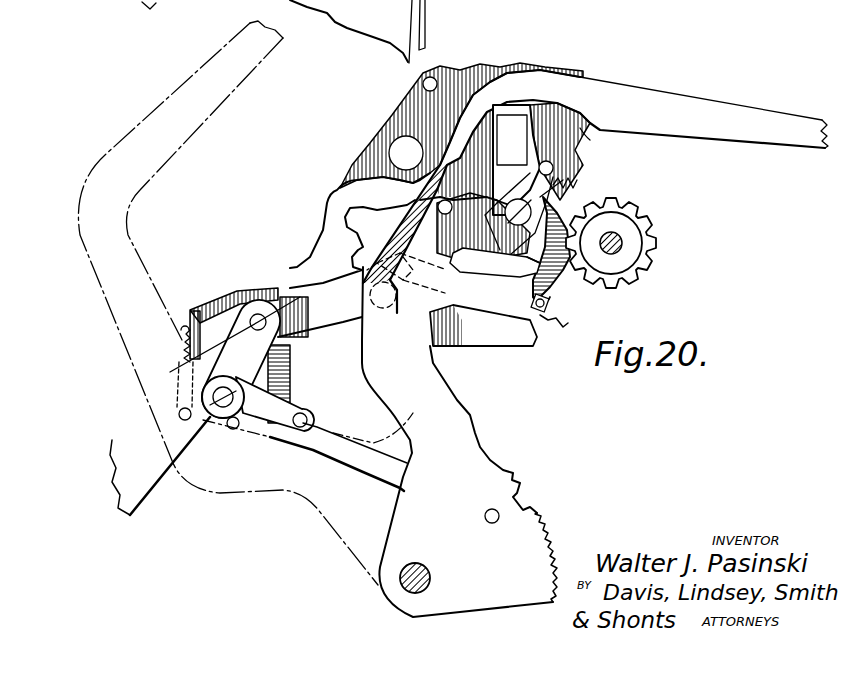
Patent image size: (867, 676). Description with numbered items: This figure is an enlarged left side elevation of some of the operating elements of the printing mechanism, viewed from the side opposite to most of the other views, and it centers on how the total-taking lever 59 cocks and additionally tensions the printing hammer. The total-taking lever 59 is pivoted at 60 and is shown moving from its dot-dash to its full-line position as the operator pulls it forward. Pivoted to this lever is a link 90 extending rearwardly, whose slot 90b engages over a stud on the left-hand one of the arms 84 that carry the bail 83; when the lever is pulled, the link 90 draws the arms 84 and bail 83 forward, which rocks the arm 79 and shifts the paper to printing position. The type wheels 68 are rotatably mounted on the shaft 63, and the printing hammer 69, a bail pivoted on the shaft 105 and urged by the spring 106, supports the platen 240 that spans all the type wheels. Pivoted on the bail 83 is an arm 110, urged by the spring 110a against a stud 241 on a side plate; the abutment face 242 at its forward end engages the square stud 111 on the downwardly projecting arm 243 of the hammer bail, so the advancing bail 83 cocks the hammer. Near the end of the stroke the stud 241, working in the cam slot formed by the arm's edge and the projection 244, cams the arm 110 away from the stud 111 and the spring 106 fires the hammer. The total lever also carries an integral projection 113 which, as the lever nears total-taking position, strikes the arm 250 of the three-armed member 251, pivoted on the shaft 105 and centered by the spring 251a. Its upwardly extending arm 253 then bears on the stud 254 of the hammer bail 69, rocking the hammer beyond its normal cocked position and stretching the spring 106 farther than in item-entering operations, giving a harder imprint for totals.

The total-taking lever 59 is at (707, 110).
The pivot 60 is at (421, 567).
The shaft 63 is at (622, 243).
The type wheels 68 is at (642, 218).
The printing hammer 69 is at (508, 155).
The arm 79 is at (312, 238).
The bail 83 is at (294, 302).
The arms 84 is at (123, 440).
The link 90 is at (360, 477).
The slot 90b is at (306, 412).
The shaft 105 is at (520, 205).
The spring 106 is at (432, 108).
The arm 110 is at (504, 334).
The spring 110a is at (183, 354).
The square stud 111 is at (548, 306).
The projection 113 is at (531, 276).
The platen 240 is at (586, 140).
The stud 241 is at (381, 312).
The abutment face 242 is at (544, 329).
The downwardly projecting arm 243 is at (563, 281).
The projection 244 is at (417, 293).
The arm 250 is at (531, 257).
The three-armed member 251 is at (519, 214).
The centering spring 251a is at (582, 190).
The upwardly extending arm 253 is at (445, 193).
The stud 254 is at (461, 228).